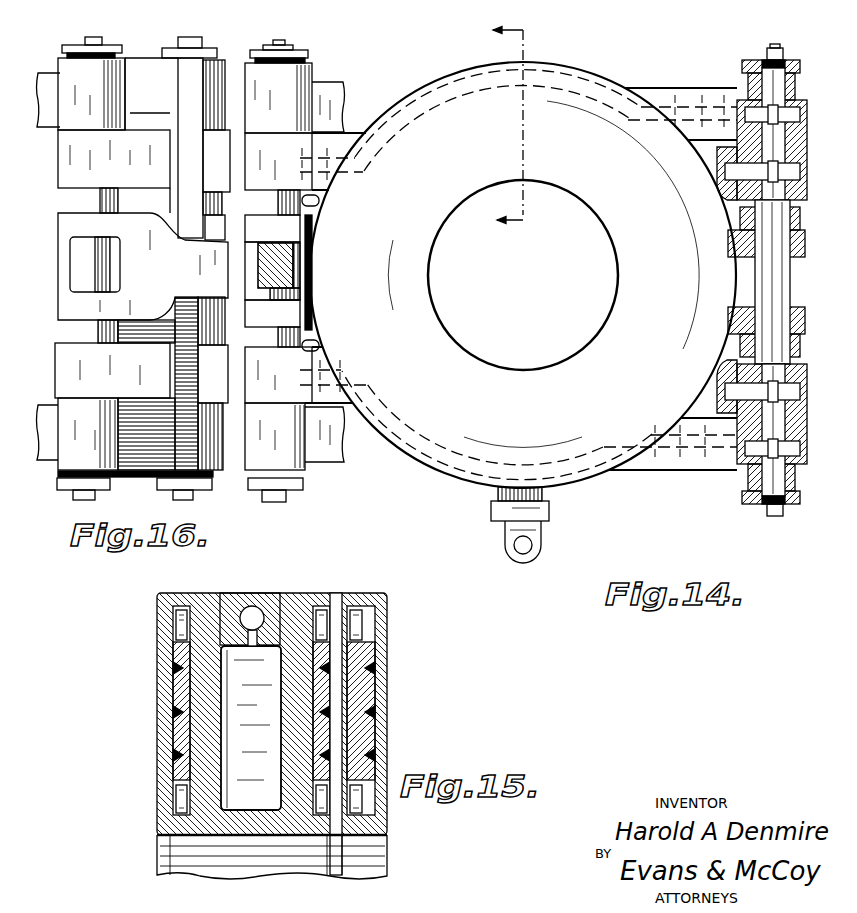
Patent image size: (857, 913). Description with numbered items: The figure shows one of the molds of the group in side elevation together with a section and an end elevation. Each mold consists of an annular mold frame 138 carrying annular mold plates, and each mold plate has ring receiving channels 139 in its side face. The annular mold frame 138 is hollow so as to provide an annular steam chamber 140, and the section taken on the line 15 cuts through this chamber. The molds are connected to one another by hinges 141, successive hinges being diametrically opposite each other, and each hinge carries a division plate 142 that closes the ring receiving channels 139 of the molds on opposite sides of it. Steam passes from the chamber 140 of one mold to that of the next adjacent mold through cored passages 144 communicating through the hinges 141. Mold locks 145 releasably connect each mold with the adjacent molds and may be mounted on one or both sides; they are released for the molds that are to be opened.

In FIG. 14, the section line 15 is at (487, 128).
In FIG. 16, the annular mold frame 138 is at (140, 58).
In FIG. 15, the annular mold frame 138 is at (292, 612).
In FIG. 15, the ring receiving channels 139 is at (175, 745).
In FIG. 15, the annular steam chamber 140 is at (231, 615).
In FIG. 14, the hinges 141 is at (735, 472).
In FIG. 16, the division plate 142 is at (195, 76).
In FIG. 14, the division plate 142 is at (576, 105).
In FIG. 15, the division plate 142 is at (172, 634).
In FIG. 14, the cored passages 144 is at (420, 108).
In FIG. 15, the cored passages 144 is at (262, 605).
In FIG. 16, the mold locks 145 is at (58, 285).
In FIG. 14, the mold locks 145 is at (312, 258).